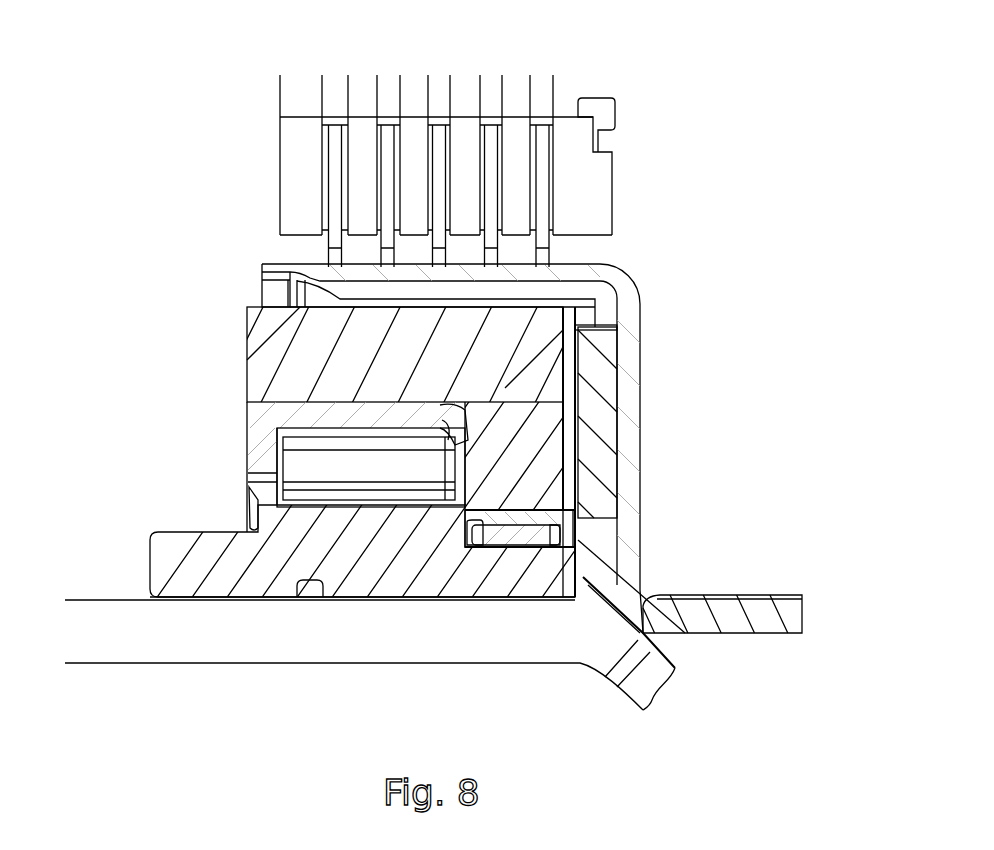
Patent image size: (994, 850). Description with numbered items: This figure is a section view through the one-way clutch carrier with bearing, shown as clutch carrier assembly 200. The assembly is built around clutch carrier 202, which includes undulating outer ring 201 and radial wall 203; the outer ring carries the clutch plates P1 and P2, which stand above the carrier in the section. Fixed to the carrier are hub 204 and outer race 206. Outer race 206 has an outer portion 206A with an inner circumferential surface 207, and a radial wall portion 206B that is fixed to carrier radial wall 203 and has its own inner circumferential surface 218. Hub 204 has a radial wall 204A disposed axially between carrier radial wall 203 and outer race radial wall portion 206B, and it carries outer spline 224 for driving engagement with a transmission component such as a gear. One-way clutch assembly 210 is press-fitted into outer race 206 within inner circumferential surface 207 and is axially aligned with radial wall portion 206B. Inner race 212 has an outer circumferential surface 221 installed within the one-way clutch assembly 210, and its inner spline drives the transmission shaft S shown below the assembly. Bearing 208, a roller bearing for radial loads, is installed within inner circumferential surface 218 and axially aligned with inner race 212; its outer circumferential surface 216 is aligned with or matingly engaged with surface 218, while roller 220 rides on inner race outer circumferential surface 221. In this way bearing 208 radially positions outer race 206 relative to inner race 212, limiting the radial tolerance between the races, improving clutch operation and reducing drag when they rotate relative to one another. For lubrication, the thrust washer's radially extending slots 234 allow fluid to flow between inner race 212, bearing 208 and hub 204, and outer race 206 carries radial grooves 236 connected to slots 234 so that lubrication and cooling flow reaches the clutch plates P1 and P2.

The clutch plate P1 is at (410, 127).
The clutch plate P2 is at (540, 133).
The clutch carrier assembly 200 is at (693, 236).
The undulating outer ring 201 is at (312, 267).
The clutch carrier 202 is at (642, 282).
The radial wall 203 is at (642, 400).
The hub 204 is at (805, 626).
The radial wall 204A is at (598, 345).
The outer race 206 is at (248, 372).
The outer portion 206A is at (320, 345).
The radial wall portion 206B is at (527, 470).
The inner circumferential surface 207 is at (268, 430).
The bearing 208 is at (563, 535).
The one-way clutch assembly 210 is at (263, 433).
The inner race 212 is at (170, 562).
The outer circumferential surface 216 is at (522, 508).
The inner circumferential surface 218 is at (657, 598).
The roller 220 is at (580, 568).
The outer circumferential surface 221 is at (367, 503).
The outer spline 224 is at (802, 600).
The slots 234 is at (587, 498).
The radial grooves 236 is at (572, 378).
The transmission shaft S is at (240, 664).